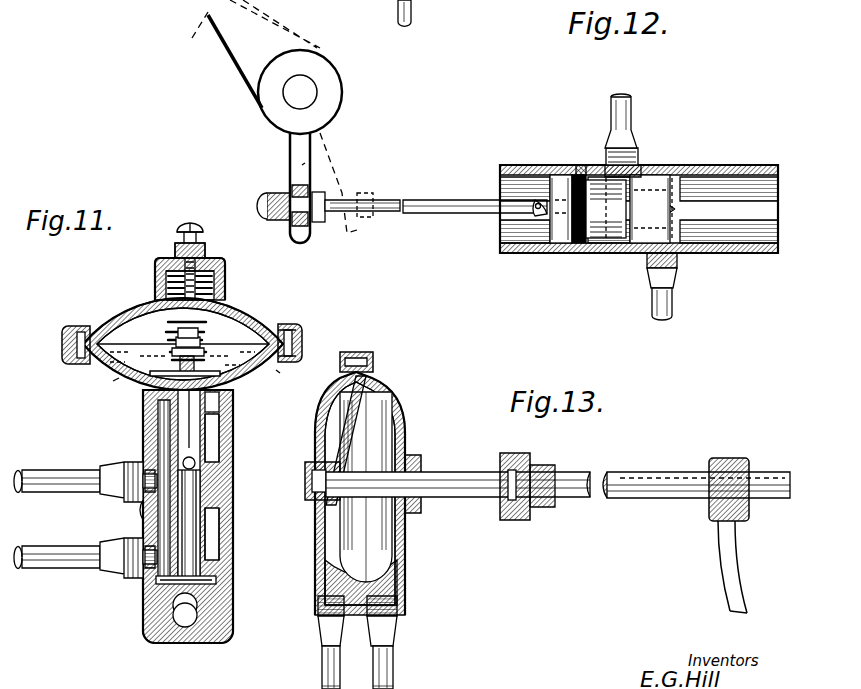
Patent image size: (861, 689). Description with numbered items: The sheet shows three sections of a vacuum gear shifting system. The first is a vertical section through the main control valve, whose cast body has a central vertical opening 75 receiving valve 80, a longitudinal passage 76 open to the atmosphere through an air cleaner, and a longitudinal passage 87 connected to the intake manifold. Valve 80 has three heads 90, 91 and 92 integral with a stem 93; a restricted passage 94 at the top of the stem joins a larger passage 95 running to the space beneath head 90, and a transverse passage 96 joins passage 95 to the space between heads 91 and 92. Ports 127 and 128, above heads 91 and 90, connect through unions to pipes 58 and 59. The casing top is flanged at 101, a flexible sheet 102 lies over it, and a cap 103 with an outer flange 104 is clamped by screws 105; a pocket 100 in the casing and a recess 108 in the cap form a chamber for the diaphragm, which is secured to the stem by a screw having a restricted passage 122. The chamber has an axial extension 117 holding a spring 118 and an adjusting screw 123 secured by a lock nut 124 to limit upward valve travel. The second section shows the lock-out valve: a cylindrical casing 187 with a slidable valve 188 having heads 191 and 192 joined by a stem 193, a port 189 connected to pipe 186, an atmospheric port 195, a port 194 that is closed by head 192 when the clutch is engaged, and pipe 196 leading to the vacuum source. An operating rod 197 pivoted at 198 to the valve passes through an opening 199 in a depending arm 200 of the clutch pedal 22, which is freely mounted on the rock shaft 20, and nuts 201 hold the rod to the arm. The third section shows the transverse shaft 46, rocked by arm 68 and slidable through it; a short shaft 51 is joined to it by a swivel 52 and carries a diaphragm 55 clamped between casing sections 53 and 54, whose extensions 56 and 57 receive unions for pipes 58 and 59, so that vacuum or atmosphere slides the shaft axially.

In FIG. 12, the rock shaft 20 is at (294, 92).
In FIG. 12, the clutch pedal 22 is at (232, 40).
In FIG. 13, the shaft 46 is at (592, 472).
In FIG. 13, the short shaft 51 is at (454, 472).
In FIG. 13, the swivel 52 is at (516, 522).
In FIG. 13, the casing section 53 is at (400, 416).
In FIG. 13, the casing section 54 is at (322, 448).
In FIG. 13, the diaphragm 55 is at (350, 430).
In FIG. 13, the extension 56 is at (402, 610).
In FIG. 13, the extension 57 is at (314, 602).
In FIG. 11, the pipe 58 is at (60, 469).
In FIG. 13, the pipe 58 is at (392, 672).
In FIG. 11, the pipe 59 is at (68, 568).
In FIG. 13, the pipe 59 is at (320, 668).
In FIG. 13, the arm 68 is at (724, 574).
In FIG. 11, the vertical opening 75 is at (142, 524).
In FIG. 11, the longitudinal passage 76 is at (185, 642).
In FIG. 11, the valve 80 is at (210, 474).
In FIG. 11, the longitudinal passage 87 is at (144, 426).
In FIG. 11, the valve head 90 is at (212, 570).
In FIG. 11, the valve head 91 is at (226, 501).
In FIG. 11, the valve head 92 is at (232, 414).
In FIG. 11, the valve stem 93 is at (214, 546).
In FIG. 11, the restricted passage 94 is at (234, 437).
In FIG. 11, the passage 95 is at (194, 532).
In FIG. 11, the transverse passage 96 is at (194, 466).
In FIG. 11, the circular pocket 100 is at (114, 390).
In FIG. 11, the flange 101 is at (280, 376).
In FIG. 11, the flexible sheet 102 is at (301, 344).
In FIG. 11, the cap 103 is at (254, 311).
In FIG. 11, the outer flange 104 is at (65, 345).
In FIG. 11, the screws 105 is at (294, 328).
In FIG. 11, the circular recess 108 is at (130, 320).
In FIG. 11, the axial extension 117 is at (154, 267).
In FIG. 11, the spring 118 is at (154, 285).
In FIG. 11, the restricted passage 122 is at (204, 340).
In FIG. 11, the adjusting screw 123 is at (194, 223).
In FIG. 11, the lock nut 124 is at (175, 250).
In FIG. 11, the port 127 is at (144, 471).
In FIG. 11, the port 128 is at (148, 572).
In FIG. 12, the pipe 186 is at (632, 113).
In FIG. 12, the cylindrical casing 187 is at (716, 165).
In FIG. 12, the valve 188 is at (540, 246).
In FIG. 12, the port 189 is at (634, 166).
In FIG. 12, the valve head 191 is at (560, 250).
In FIG. 12, the valve head 192 is at (634, 250).
In FIG. 12, the stem 193 is at (598, 250).
In FIG. 12, the port 194 is at (702, 226).
In FIG. 12, the atmospheric port 195 is at (582, 164).
In FIG. 12, the pipe 196 is at (672, 300).
In FIG. 12, the operating rod 197 is at (453, 200).
In FIG. 12, the pivotal connection 198 is at (526, 226).
In FIG. 12, the opening 199 is at (293, 191).
In FIG. 12, the depending arm 200 is at (310, 168).
In FIG. 12, the nuts 201 is at (278, 218).